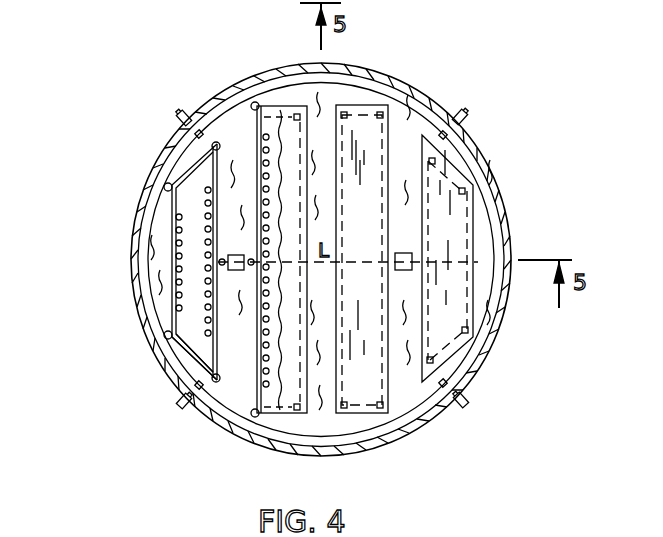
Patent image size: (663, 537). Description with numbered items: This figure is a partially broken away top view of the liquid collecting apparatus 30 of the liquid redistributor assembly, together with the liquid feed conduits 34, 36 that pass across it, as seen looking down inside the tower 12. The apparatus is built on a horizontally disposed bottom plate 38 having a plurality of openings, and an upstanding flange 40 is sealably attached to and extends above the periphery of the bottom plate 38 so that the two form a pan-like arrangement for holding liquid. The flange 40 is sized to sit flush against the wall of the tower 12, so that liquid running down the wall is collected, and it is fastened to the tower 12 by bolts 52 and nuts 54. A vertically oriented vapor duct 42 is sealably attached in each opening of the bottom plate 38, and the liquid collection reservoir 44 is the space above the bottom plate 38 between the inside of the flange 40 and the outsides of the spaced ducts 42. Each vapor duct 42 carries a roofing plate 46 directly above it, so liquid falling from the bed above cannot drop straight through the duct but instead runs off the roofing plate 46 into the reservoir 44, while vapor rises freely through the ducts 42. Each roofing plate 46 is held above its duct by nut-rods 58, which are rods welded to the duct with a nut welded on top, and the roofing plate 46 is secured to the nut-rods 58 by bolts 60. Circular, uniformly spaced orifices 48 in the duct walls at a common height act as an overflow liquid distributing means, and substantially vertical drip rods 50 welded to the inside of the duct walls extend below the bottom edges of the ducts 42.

The liquid collecting apparatus 30 is at (432, 47).
The tower 12 is at (162, 152).
The liquid feed conduit 34 is at (227, 252).
The liquid feed conduit 36 is at (408, 252).
The bottom plate 38 is at (248, 393).
The upstanding flange 40 is at (158, 314).
The vapor duct 42 is at (190, 355).
The liquid collection reservoir 44 is at (249, 343).
The roofing plate 46 is at (475, 223).
The orifice 48 is at (212, 266).
The drip rod 50 is at (207, 242).
The bolt 52 is at (218, 412).
The nut 54 is at (177, 398).
The nut-rod 58 is at (254, 103).
The bolt 60 is at (466, 188).